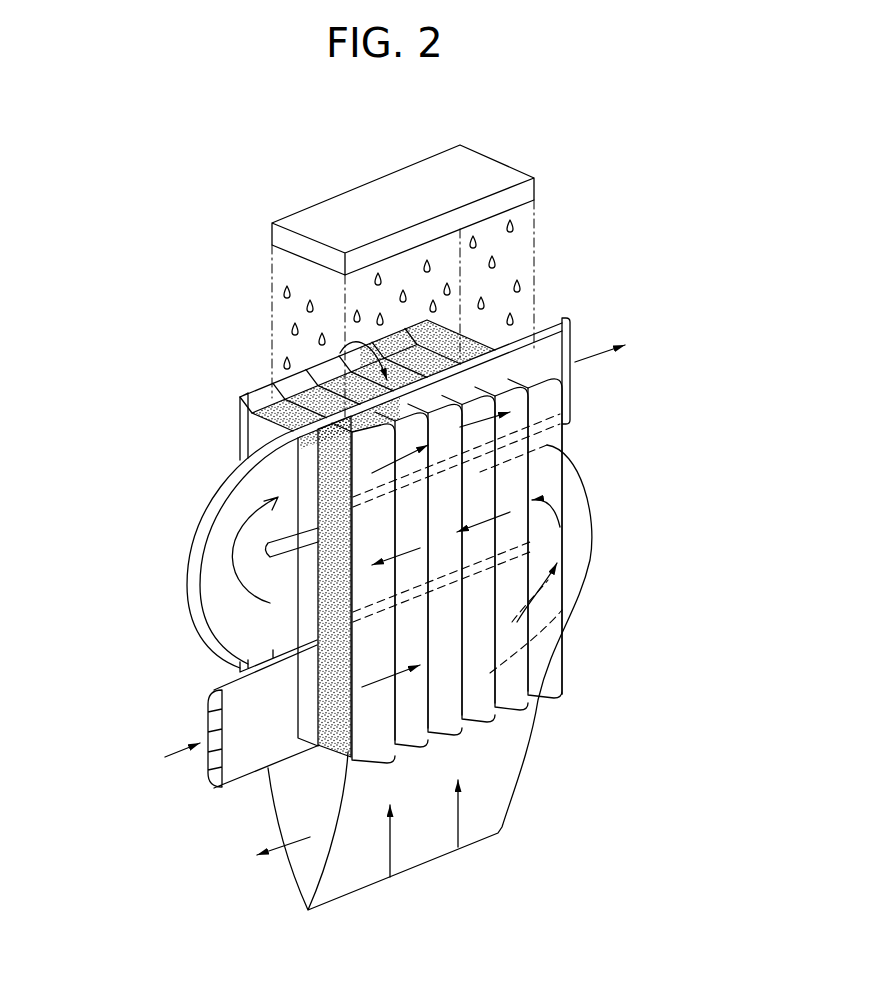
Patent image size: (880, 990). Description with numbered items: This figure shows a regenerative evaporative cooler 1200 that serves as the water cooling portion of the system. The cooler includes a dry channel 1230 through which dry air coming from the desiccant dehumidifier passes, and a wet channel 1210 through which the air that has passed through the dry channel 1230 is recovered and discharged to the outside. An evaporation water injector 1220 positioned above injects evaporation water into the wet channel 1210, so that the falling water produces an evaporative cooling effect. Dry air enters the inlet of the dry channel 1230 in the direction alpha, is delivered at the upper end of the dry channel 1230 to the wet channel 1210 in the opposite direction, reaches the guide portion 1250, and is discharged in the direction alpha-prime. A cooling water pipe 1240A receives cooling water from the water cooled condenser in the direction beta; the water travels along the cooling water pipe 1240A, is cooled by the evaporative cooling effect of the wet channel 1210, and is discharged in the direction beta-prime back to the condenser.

The regenerative evaporative cooler 1200 is at (195, 262).
The wet channel 1210 is at (427, 383).
The evaporation water injector 1220 is at (490, 170).
The dry channel 1230 is at (552, 660).
The cooling water pipe 1240A is at (210, 527).
The guide portion 1250 is at (510, 775).